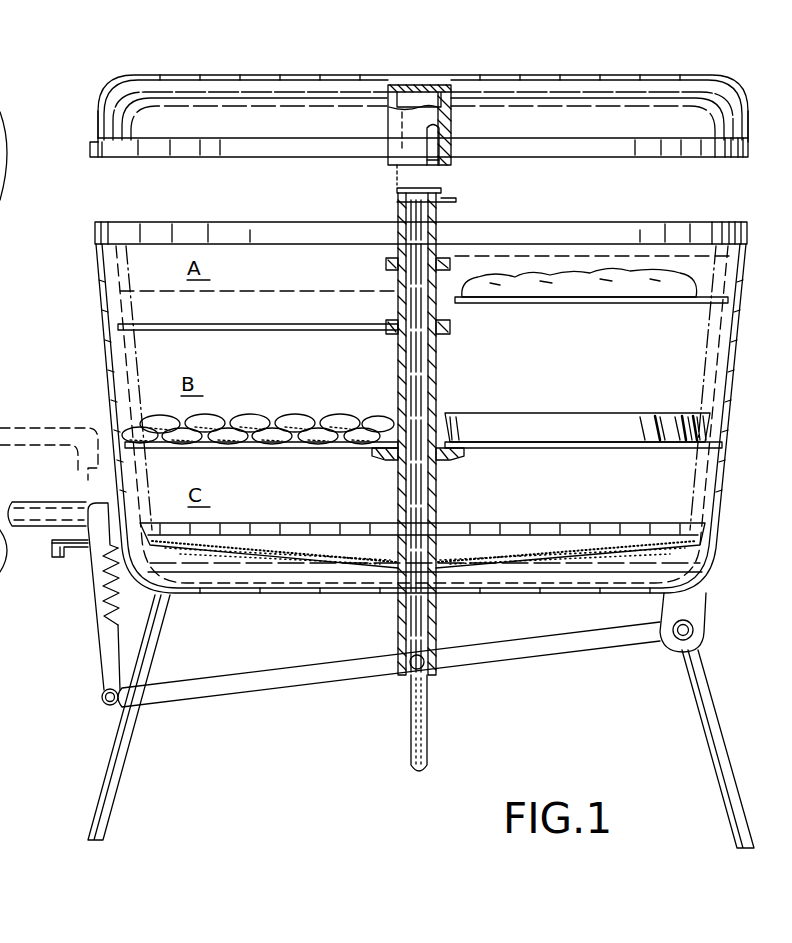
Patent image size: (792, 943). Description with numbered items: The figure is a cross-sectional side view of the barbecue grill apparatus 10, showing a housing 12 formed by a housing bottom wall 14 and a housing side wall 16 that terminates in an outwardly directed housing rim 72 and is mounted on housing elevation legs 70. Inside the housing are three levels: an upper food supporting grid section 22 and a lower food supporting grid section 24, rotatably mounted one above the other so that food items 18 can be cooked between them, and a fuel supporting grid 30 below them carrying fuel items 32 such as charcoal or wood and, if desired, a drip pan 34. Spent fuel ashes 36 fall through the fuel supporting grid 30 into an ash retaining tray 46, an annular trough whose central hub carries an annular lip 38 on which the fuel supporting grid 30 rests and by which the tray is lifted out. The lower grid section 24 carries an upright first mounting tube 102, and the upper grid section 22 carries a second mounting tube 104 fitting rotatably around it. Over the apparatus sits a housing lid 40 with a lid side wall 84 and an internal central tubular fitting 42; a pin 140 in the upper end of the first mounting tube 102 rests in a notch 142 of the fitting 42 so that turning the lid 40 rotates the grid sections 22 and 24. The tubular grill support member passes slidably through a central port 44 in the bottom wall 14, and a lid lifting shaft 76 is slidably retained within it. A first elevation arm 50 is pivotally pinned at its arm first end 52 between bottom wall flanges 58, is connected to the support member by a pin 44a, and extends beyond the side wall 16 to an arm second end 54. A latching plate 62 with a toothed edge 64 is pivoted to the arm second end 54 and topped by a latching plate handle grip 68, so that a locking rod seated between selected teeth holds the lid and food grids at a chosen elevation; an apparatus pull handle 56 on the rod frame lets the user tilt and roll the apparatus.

The barbecue grill apparatus 10 is at (134, 73).
The housing 12 is at (718, 508).
The housing bottom wall 14 is at (538, 593).
The housing side wall 16 is at (101, 337).
The food items 18 is at (611, 290).
The upper food supporting grid section 22 is at (0, 290).
The lower food supporting grid section 24 is at (292, 332).
The fuel supporting grid 30 is at (289, 449).
The fuel items 32 is at (344, 417).
The drip pan 34 is at (546, 427).
The spent fuel ashes 36 is at (468, 552).
The annular lip 38 is at (382, 460).
The housing lid 40 is at (530, 77).
The lid tubular fitting 42 is at (397, 138).
The central port 44 is at (417, 627).
The pin 44a is at (406, 666).
The ash retaining tray 46 is at (610, 523).
The first elevation arm 50 is at (272, 690).
The arm first end 52 is at (655, 632).
The arm second end 54 is at (152, 707).
The apparatus pull handle 56 is at (52, 547).
The bottom wall flanges 58 is at (706, 608).
The latching plate 62 is at (107, 636).
The toothed edge 64 is at (104, 603).
The latching plate handle grip 68 is at (38, 502).
The housing elevation legs 70 is at (103, 791).
The housing rim 72 is at (201, 224).
The lid lifting shaft 76 is at (427, 740).
The lid side wall 84 is at (98, 117).
The first mounting tube 102 is at (396, 320).
The second mounting tube 104 is at (396, 258).
The pin 140 is at (456, 200).
The notch 142 is at (434, 160).